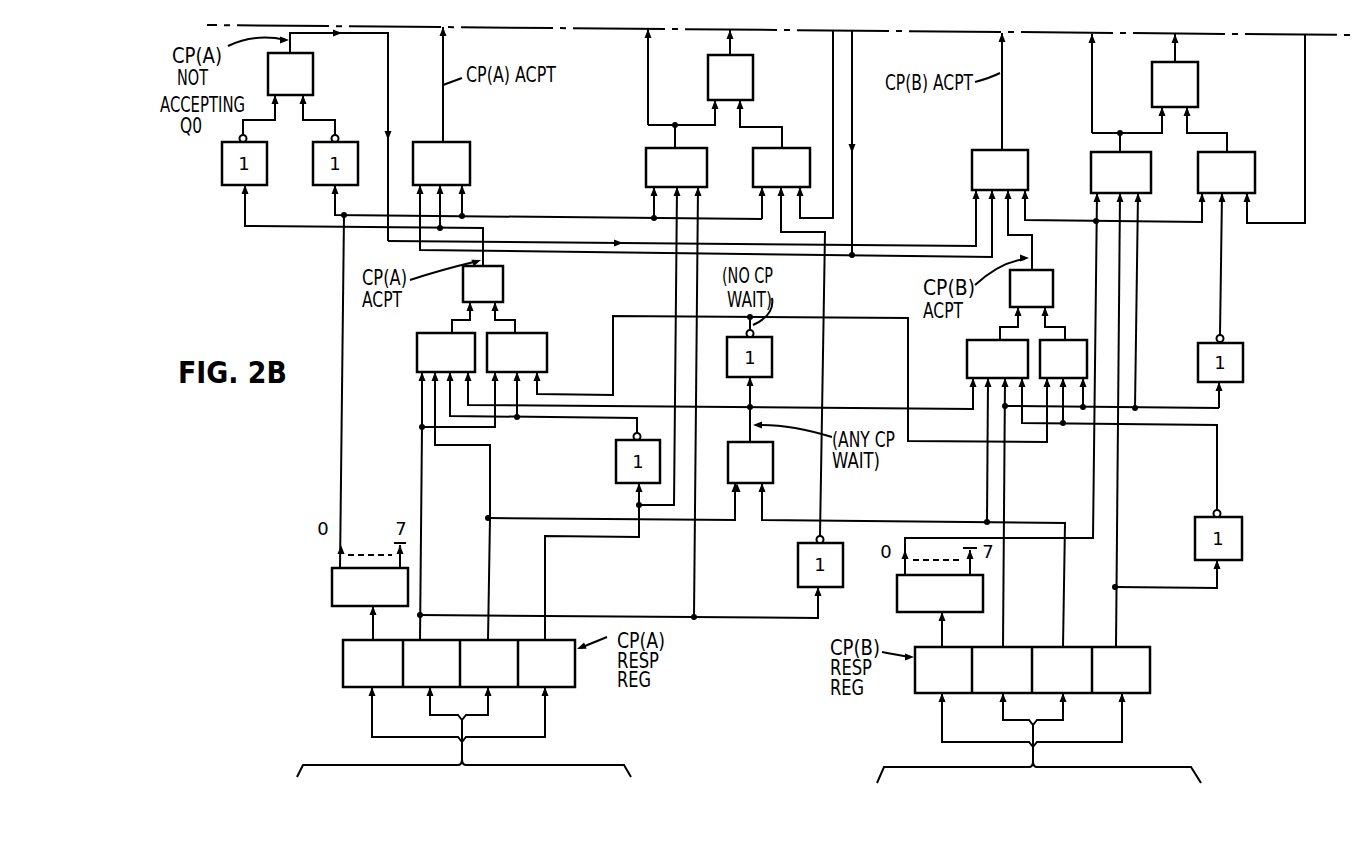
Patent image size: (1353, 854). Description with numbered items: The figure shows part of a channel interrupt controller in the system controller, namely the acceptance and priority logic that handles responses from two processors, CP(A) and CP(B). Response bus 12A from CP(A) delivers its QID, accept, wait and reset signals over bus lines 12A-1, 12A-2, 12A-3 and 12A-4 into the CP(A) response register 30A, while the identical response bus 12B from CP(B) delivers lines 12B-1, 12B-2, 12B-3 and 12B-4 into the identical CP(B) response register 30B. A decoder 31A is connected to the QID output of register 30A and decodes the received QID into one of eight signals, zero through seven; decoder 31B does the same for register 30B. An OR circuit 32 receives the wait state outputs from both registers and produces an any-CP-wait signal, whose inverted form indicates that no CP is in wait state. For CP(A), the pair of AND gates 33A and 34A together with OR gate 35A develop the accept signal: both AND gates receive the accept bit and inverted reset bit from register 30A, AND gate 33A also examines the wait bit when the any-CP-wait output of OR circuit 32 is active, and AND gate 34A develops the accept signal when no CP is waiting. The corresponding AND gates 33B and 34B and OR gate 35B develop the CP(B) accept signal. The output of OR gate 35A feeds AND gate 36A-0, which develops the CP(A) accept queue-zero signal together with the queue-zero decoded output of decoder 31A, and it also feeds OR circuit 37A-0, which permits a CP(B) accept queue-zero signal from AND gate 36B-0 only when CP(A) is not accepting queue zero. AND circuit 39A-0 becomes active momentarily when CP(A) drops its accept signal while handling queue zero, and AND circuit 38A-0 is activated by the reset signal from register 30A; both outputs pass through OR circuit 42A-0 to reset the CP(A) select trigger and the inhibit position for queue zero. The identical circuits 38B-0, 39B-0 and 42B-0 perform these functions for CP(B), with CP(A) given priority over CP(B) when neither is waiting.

The OR circuit 37A-0 is at (313, 72).
The AND gate 36A-0 is at (472, 163).
The AND circuit 38A-0 is at (645, 173).
The AND circuit 39A-0 is at (800, 148).
The OR circuit 42A-0 is at (753, 78).
The AND gate 36B-0 is at (972, 157).
The AND circuit 38B-0 is at (1092, 157).
The AND circuit 39B-0 is at (1260, 138).
The OR circuit 42B-0 is at (1198, 85).
The OR gate 35A is at (503, 288).
The AND gate 33A is at (417, 350).
The AND gate 34A is at (547, 357).
The OR circuit 32 is at (728, 453).
The OR gate 35B is at (1049, 270).
The AND gate 33B is at (967, 358).
The AND gate 34B is at (1077, 343).
The decoder 31A is at (332, 583).
The CP(A) response register 30A is at (343, 655).
The decoder 31B is at (897, 592).
The CP(B) response register 30B is at (1153, 666).
The bus line 12A-1 is at (368, 707).
The accept line 12A-2 is at (428, 707).
The wait line 12A-3 is at (489, 702).
The reset line 12A-4 is at (548, 708).
The response bus 12A is at (464, 776).
The bus line 12B-1 is at (940, 720).
The accept line 12B-2 is at (1002, 716).
The wait line 12B-3 is at (1083, 710).
The reset line 12B-4 is at (1125, 718).
The response bus 12B is at (1039, 783).